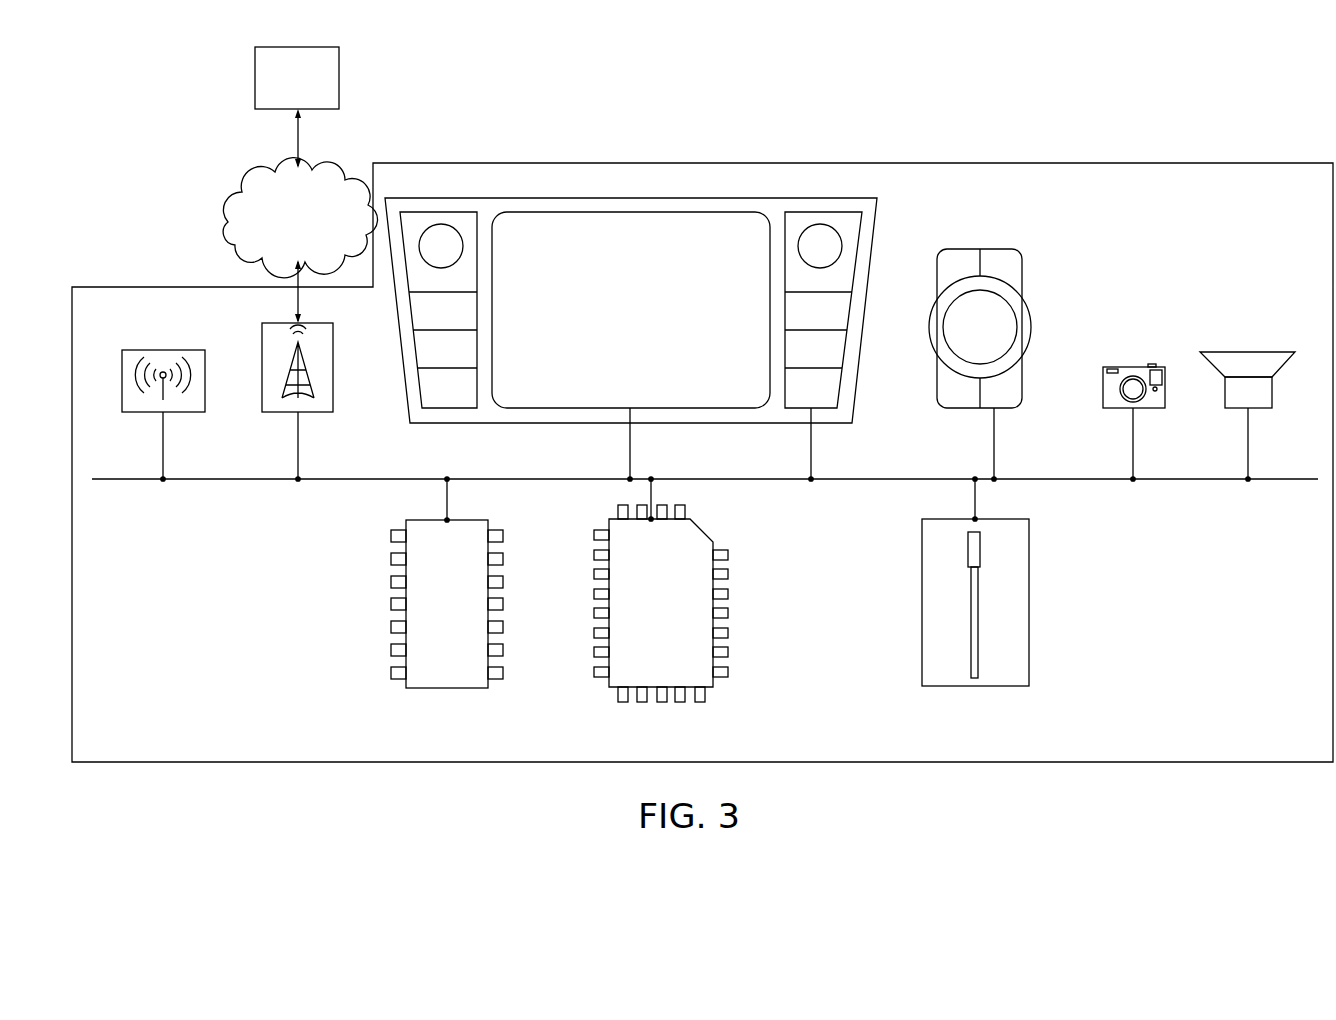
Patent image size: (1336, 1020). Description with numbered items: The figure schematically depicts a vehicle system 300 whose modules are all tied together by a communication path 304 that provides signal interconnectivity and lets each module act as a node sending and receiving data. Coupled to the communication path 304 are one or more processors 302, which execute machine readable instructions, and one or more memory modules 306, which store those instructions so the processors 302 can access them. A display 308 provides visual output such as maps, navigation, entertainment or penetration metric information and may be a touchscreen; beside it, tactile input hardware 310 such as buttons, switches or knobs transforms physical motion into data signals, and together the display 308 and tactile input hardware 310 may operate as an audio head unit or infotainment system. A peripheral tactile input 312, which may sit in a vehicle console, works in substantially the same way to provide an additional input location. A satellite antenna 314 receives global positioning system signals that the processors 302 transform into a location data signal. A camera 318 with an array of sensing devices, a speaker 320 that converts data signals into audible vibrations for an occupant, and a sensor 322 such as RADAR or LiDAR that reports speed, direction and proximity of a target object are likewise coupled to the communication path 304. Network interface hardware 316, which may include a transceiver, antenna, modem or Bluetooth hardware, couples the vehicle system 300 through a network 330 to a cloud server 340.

The vehicle system 300 is at (1130, 135).
The processor 302 is at (609, 690).
The communication path 304 is at (352, 480).
The memory module 306 is at (447, 690).
The display 308 is at (617, 237).
The tactile input hardware 310 is at (410, 218).
The peripheral tactile input 312 is at (970, 249).
The satellite antenna 314 is at (975, 688).
The network interface hardware 316 is at (262, 330).
The camera 318 is at (1135, 367).
The speaker 320 is at (1245, 352).
The sensor 322 is at (163, 350).
The network 330 is at (228, 210).
The cloud server 340 is at (340, 80).